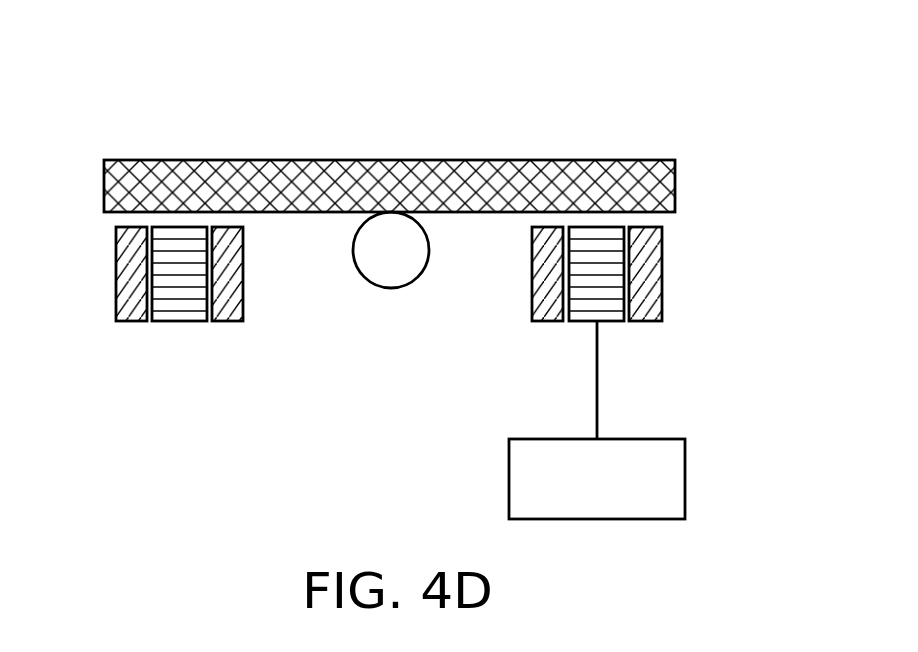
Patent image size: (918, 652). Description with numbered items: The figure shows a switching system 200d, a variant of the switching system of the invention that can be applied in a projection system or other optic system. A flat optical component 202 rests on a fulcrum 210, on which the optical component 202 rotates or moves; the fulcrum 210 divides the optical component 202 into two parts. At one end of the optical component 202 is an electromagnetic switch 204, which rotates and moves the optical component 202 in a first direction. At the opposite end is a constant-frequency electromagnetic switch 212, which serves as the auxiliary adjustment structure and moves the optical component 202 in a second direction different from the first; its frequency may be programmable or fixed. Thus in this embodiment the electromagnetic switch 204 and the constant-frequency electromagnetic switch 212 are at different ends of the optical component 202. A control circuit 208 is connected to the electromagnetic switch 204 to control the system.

The switching system 200d is at (88, 42).
The optical component 202 is at (283, 160).
The electromagnetic switch 204 is at (656, 273).
The control circuit 208 is at (672, 479).
The fulcrum 210 is at (387, 267).
The constant-frequency electromagnetic switch 212 is at (183, 307).